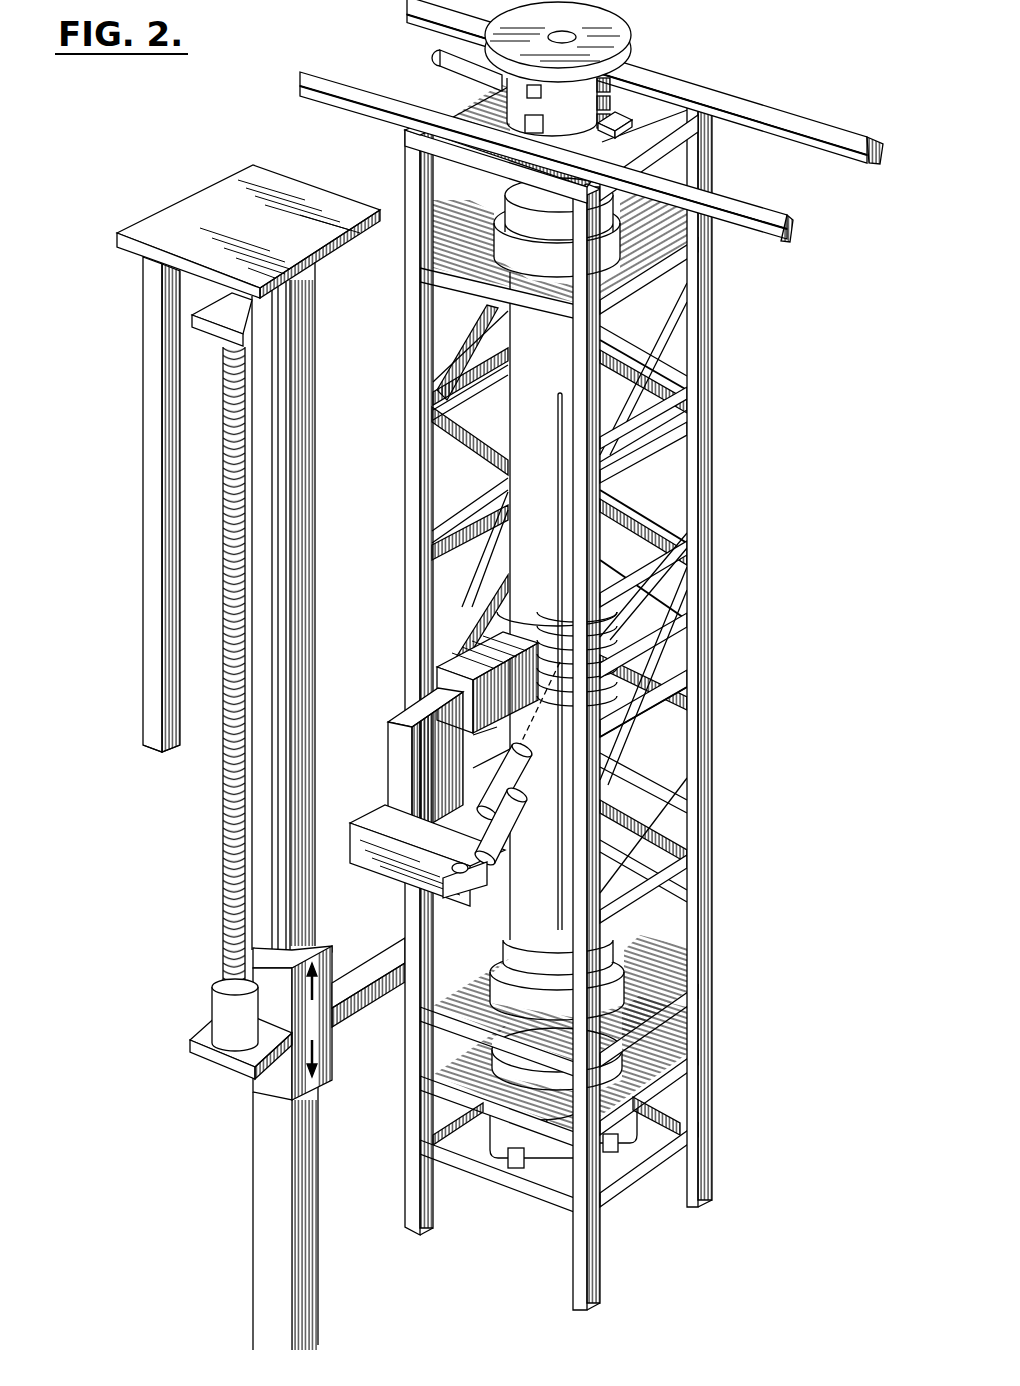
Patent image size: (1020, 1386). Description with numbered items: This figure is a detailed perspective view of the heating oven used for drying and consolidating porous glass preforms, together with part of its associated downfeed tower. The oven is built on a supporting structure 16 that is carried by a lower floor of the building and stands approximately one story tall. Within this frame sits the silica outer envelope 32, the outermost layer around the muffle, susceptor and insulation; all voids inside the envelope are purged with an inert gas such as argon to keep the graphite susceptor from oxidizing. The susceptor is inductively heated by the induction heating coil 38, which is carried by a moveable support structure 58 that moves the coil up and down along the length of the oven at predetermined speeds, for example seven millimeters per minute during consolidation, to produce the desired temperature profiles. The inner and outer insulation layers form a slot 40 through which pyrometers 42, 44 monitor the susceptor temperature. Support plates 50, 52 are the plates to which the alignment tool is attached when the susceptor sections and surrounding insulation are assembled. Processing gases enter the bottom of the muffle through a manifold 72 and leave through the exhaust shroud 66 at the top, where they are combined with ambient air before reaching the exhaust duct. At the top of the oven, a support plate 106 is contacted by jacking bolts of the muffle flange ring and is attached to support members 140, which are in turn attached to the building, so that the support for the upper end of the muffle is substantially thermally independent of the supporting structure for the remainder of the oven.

The supporting structure 16 is at (712, 858).
The outer envelope 32 is at (553, 376).
The induction heating coil 38 is at (618, 640).
The slot 40 is at (560, 492).
The pyrometer 42 is at (490, 866).
The pyrometer 44 is at (487, 813).
The support plate 50 is at (667, 243).
The support plate 52 is at (673, 984).
The moveable support structure 58 is at (378, 717).
The exhaust shroud 66 is at (614, 97).
The manifold 72 is at (643, 1128).
The support plate 106 is at (668, 123).
The support members 140 is at (763, 215).